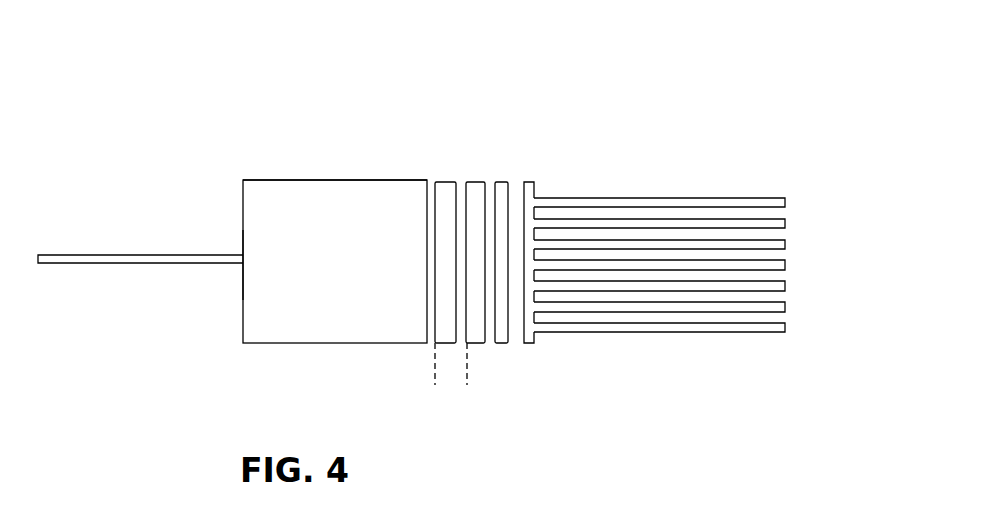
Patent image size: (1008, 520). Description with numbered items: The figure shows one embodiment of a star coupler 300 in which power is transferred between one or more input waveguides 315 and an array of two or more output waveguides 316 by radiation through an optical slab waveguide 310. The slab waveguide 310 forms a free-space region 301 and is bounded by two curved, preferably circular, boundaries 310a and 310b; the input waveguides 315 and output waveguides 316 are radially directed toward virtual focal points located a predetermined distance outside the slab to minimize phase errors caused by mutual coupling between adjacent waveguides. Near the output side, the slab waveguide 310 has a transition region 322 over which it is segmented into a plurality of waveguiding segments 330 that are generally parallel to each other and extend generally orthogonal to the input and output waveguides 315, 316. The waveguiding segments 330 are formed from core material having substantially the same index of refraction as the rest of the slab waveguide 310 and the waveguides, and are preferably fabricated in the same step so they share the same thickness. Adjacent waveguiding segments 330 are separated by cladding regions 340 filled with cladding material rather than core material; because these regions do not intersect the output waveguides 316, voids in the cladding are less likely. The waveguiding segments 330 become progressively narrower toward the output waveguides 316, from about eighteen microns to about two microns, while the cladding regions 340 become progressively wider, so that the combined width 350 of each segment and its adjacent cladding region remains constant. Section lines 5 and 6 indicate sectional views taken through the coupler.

The star coupler 300 is at (168, 77).
The free-space region 301 is at (240, 173).
The optical slab waveguide 310 is at (340, 180).
The curved boundary 310a is at (243, 306).
The curved boundary 310b is at (533, 342).
The input waveguide 315 is at (133, 255).
The output waveguides 316 is at (793, 195).
The transition region 322 is at (533, 176).
The waveguiding segments 330 is at (537, 370).
The cladding regions 340 is at (516, 188).
The combined width 350 is at (467, 385).
The section line 5- 5 is at (699, 187).
The section line 6- 6 is at (477, 115).